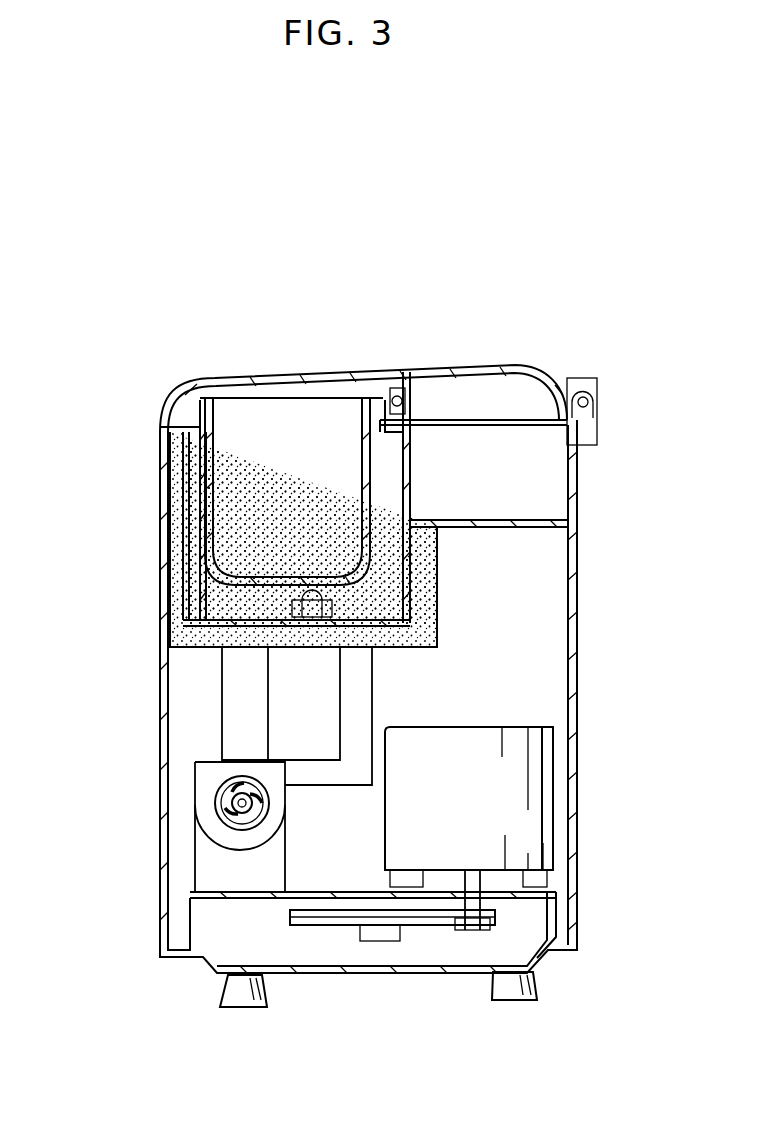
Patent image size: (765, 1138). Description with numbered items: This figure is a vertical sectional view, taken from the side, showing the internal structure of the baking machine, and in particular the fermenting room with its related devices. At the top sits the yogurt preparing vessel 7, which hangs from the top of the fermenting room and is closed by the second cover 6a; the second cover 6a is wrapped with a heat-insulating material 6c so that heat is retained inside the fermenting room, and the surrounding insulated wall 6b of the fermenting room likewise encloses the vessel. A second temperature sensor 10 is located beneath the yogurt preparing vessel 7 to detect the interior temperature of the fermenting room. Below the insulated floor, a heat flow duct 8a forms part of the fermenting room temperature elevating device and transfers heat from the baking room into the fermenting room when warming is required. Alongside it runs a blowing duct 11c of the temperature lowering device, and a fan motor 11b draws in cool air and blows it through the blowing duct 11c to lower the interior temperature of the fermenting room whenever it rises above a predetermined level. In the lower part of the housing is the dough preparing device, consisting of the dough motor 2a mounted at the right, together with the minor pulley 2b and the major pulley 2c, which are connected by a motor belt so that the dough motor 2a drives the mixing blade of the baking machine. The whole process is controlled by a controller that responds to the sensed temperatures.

The dough motor 2a is at (527, 808).
The minor pulley 2b is at (462, 928).
The major pulley 2c is at (313, 928).
The second cover 6a is at (309, 372).
The outer container wall with heat insulation 6b is at (162, 514).
The heat-insulating material 6c is at (186, 593).
The yogurt preparing vessel 7 is at (258, 450).
The heat flow duct 8a is at (242, 712).
The second temperature sensor 10 is at (292, 606).
The fan motor 11b is at (222, 815).
The blowing duct 11c is at (358, 700).